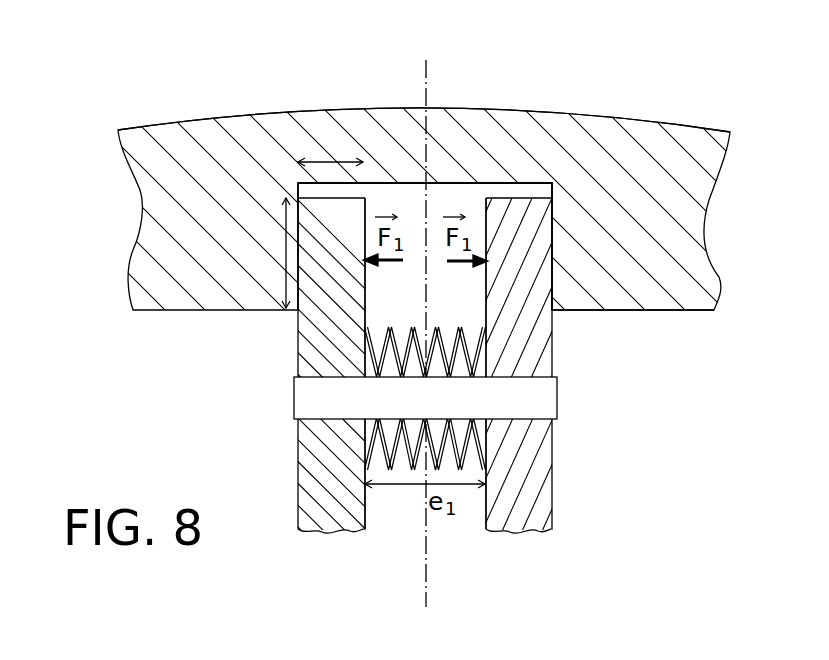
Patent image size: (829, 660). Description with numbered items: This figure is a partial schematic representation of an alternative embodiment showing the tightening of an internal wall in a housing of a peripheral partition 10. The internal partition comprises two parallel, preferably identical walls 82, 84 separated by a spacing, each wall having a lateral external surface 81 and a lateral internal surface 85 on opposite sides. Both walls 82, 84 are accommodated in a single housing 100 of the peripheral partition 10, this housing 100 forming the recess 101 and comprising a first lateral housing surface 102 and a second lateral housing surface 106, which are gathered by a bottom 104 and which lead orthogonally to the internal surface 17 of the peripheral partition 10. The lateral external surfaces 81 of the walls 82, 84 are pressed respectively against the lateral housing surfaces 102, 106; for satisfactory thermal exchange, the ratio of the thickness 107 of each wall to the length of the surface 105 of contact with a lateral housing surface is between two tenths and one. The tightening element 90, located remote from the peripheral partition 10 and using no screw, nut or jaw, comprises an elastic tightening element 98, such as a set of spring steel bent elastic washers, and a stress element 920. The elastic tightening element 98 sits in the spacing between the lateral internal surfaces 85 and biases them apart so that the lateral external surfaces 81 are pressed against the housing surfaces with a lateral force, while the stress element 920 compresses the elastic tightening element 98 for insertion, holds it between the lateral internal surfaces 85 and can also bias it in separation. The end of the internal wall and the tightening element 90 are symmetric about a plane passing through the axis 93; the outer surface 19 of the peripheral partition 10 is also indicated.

The peripheral partition 10 is at (605, 163).
The outer surface of casing 19 is at (659, 121).
The internal surface 17 is at (706, 311).
The axis 93 is at (426, 82).
The housing 100 is at (447, 131).
The recess 101 is at (452, 204).
The first lateral housing surface 102 is at (298, 218).
The bottom 104 is at (350, 183).
The surface of contact 105 is at (297, 283).
The second lateral housing surface 106 is at (553, 282).
The thickness 107 is at (317, 183).
The tightening element 90 is at (356, 331).
The stress element 920 is at (310, 397).
The elastic tightening element 98 is at (483, 447).
The lateral external surface 81 is at (356, 391).
The wall 82 is at (518, 513).
The wall 84 is at (328, 512).
The lateral internal surface 85 is at (366, 499).